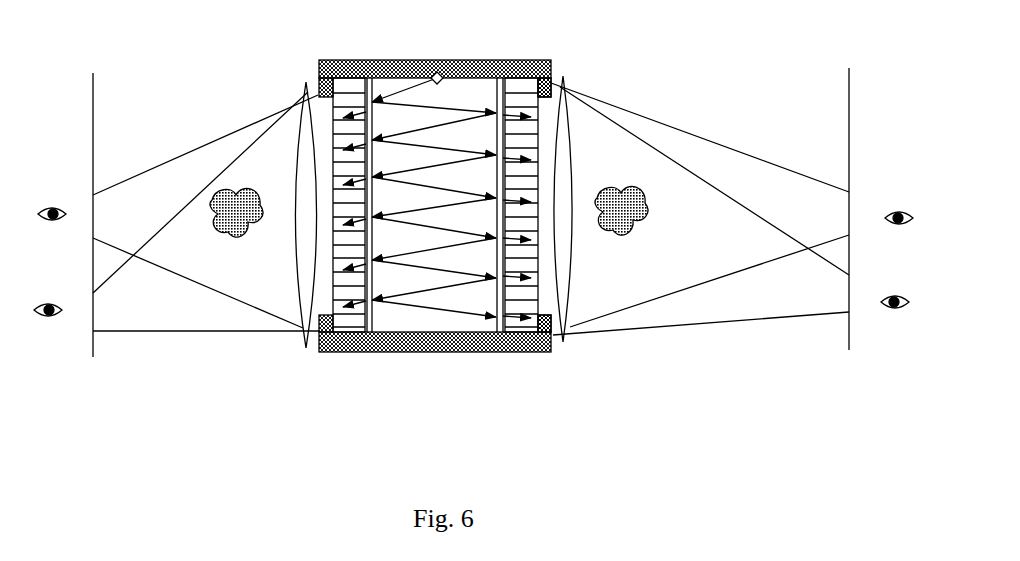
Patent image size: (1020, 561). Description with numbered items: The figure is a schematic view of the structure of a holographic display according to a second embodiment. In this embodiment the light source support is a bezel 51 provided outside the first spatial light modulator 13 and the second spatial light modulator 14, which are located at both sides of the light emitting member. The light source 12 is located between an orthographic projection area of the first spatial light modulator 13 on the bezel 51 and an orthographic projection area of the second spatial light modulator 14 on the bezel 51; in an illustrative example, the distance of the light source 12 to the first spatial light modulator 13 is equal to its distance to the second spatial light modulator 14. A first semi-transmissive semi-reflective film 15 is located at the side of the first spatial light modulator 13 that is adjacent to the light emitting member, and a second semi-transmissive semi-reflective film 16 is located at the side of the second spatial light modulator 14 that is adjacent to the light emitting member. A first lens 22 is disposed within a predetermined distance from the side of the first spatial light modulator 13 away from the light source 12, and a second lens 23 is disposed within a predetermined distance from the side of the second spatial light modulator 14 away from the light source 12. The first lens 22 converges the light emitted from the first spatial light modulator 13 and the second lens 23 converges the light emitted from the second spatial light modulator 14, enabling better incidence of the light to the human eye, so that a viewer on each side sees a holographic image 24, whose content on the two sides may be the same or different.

The light source 12 is at (437, 74).
The first spatial light modulator 13 is at (345, 338).
The second spatial light modulator 14 is at (525, 78).
The first semi-transmissive semi-reflective film 15 is at (378, 323).
The second semi-transmissive semi-reflective film 16 is at (553, 340).
The first lens 22 is at (300, 140).
The second lens 23 is at (573, 130).
The holographic image 24 is at (642, 187).
The bezel 51 is at (358, 60).